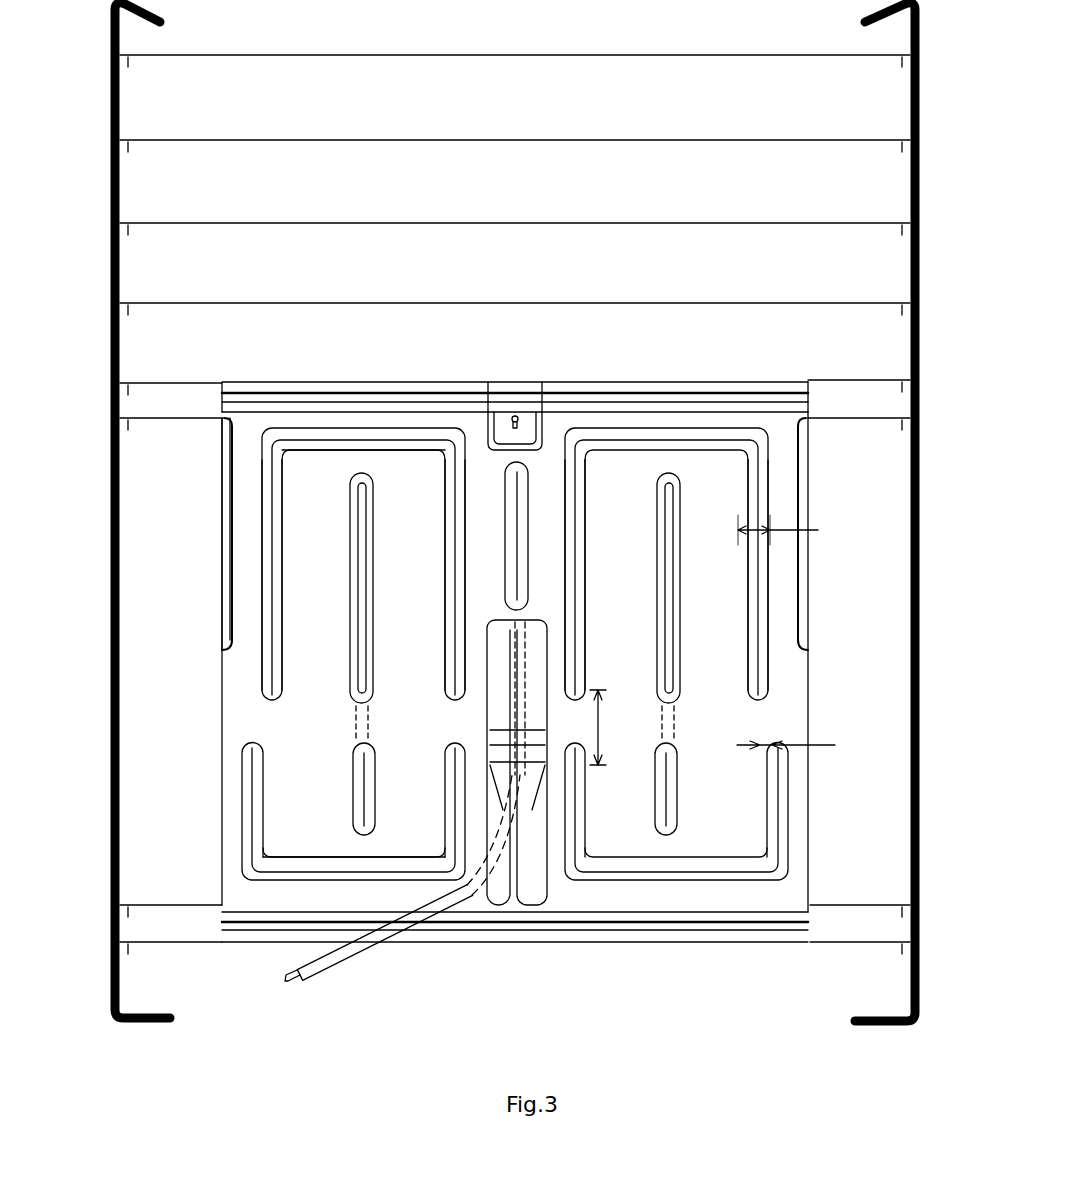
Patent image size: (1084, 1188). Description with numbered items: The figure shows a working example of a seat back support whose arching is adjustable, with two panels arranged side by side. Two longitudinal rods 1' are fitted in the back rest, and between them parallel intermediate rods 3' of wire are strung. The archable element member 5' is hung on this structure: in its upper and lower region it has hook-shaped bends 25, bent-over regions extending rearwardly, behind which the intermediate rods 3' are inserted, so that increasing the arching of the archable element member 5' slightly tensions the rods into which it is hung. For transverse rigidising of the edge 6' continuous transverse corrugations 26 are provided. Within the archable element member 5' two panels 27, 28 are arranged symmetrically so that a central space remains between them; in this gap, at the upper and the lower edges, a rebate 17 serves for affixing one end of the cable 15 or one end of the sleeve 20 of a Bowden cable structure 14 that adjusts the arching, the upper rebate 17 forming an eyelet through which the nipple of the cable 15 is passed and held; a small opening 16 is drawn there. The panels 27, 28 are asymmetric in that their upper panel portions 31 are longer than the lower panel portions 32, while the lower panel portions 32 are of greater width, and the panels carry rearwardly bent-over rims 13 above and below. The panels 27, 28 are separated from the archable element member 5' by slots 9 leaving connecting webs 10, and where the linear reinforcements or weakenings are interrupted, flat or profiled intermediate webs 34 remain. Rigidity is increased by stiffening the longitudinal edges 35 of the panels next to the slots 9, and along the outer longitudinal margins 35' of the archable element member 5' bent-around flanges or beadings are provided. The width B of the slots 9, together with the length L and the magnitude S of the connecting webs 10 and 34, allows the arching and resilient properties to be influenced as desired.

The longitudinal rods 1' is at (515, 504).
The intermediate rods 3' is at (421, 223).
The archable element member 5' is at (515, 512).
The edge 6' is at (515, 667).
The slots 9 is at (270, 500).
The connecting webs 10 is at (244, 729).
The rims 13 is at (352, 440).
The Bowden cable structure 14 is at (350, 960).
The cable 15 is at (510, 672).
The top box 16 is at (522, 412).
The rebate 17 is at (500, 380).
The sleeve 20 is at (478, 932).
The hook-shaped bends 25 is at (821, 402).
The transverse corrugations 26 is at (252, 397).
The panel 27 is at (392, 586).
The panel 28 is at (712, 589).
The upper panel portions 31 is at (392, 504).
The lower panel portions 32 is at (394, 808).
The intermediate webs 34 is at (370, 728).
The longitudinal edges 35 is at (307, 599).
The outer longitudinal margins 35' is at (192, 534).
The width of the slots B is at (782, 529).
The length of the connecting webs L is at (600, 727).
The magnitude of the connecting webs S is at (786, 736).